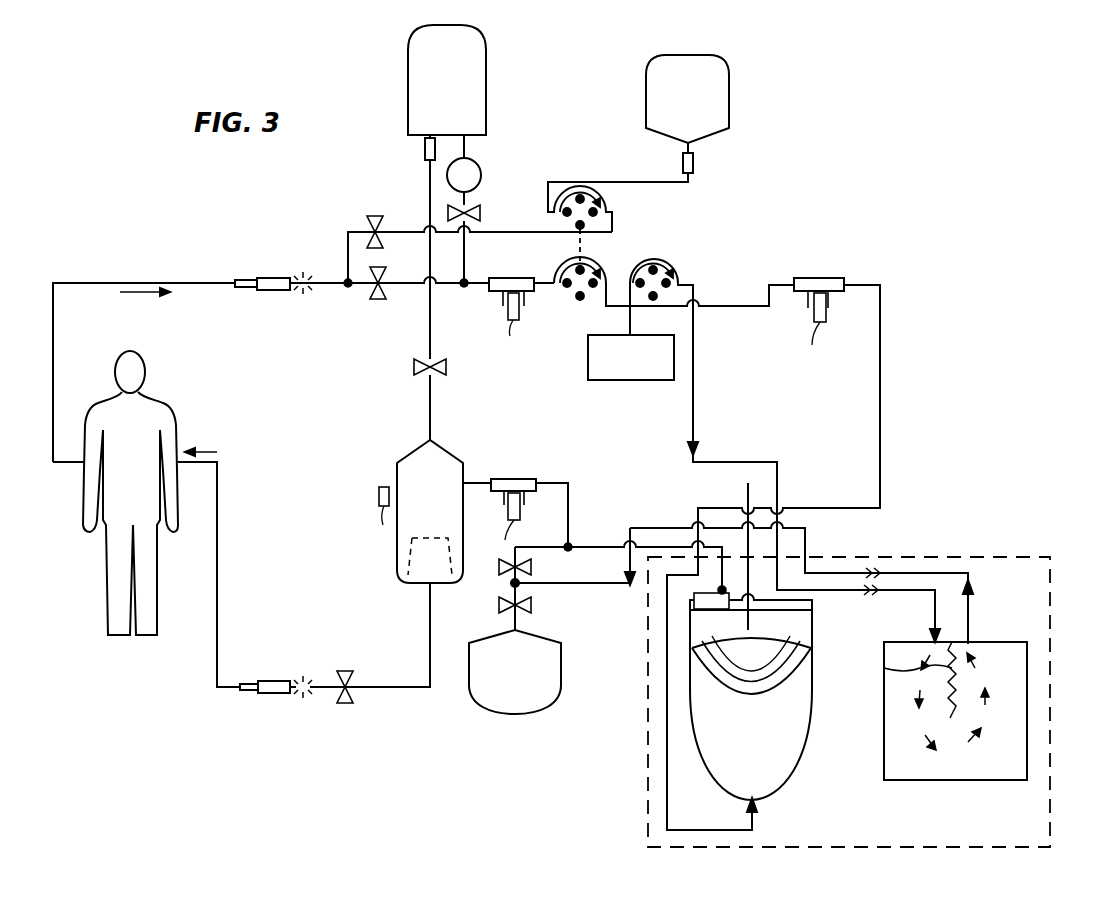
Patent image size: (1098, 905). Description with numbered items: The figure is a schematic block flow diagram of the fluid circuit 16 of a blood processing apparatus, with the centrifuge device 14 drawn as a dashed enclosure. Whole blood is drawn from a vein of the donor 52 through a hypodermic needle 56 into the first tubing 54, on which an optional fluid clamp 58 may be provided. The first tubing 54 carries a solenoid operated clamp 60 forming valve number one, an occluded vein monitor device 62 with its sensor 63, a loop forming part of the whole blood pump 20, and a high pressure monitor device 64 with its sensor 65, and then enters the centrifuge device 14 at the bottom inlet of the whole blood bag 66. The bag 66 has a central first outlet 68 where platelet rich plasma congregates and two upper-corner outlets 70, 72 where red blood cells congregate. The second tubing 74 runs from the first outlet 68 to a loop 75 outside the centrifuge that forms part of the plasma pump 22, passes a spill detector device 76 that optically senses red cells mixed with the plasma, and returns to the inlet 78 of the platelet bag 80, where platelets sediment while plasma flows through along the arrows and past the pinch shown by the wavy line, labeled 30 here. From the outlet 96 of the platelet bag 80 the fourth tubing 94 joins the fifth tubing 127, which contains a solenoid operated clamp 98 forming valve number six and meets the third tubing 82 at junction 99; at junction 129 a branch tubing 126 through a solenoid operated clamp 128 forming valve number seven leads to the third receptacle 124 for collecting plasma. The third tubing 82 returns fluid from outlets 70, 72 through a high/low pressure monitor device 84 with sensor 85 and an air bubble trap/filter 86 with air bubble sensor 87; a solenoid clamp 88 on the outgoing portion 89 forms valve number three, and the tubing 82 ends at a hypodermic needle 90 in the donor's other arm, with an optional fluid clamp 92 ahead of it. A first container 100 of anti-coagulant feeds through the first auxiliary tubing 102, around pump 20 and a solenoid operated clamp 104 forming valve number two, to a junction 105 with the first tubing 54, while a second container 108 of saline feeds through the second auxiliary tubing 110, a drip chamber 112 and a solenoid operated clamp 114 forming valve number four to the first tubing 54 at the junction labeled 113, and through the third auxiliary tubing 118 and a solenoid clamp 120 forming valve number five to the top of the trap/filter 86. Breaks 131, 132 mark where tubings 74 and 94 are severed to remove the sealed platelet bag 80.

The centrifuge device 14 is at (1052, 628).
The fluid circuit 16 is at (912, 426).
The whole blood pump 20 is at (602, 228).
The plasma pump 22 is at (679, 268).
The platelet-plasma interface 30 is at (884, 668).
The donor 52 is at (113, 540).
The first tubing 54 is at (326, 288).
The hypodermic needle 56 is at (275, 278).
The fluid clamp 58 is at (303, 276).
The solenoid operated clamp 60 is at (382, 293).
The occluded vein monitor device 62 is at (531, 291).
The sensor 63 is at (510, 318).
The high pressure monitor device 64 is at (843, 290).
The sensor 65 is at (827, 320).
The whole blood bag 66 is at (806, 744).
The first outlet 68 is at (756, 593).
The outlet 70 is at (690, 603).
The outlet 72 is at (813, 607).
The second tubing 74 is at (695, 376).
The loop 75 is at (697, 298).
The spill detector device 76 is at (652, 382).
The inlet 78 is at (933, 640).
The platelet bag 80 is at (975, 781).
The third tubing 82 is at (311, 684).
The high/low pressure monitor device 84 is at (533, 492).
The sensor 85 is at (520, 515).
The air bubble trap/filter 86 is at (446, 458).
The air bubble sensor 87 is at (384, 486).
The solenoid clamp 88 is at (348, 702).
The tubing portion 89 is at (430, 641).
The hypodermic needle 90 is at (274, 694).
The fluid clamp 92 is at (304, 699).
The fourth tubing 94 is at (956, 574).
The outlet 96 is at (970, 642).
The solenoid operated clamp 98 is at (511, 583).
The junction 99 is at (570, 546).
The first container 100 is at (730, 112).
The first auxiliary tubing 102 is at (640, 182).
The solenoid operated clamp 104 is at (370, 220).
The junction 105 is at (348, 279).
The second container 108 is at (488, 52).
The second auxiliary tubing 110 is at (467, 150).
The drip chamber 112 is at (480, 168).
The junction 113 is at (465, 287).
The solenoid operated clamp 114 is at (476, 204).
The third auxiliary tubing 118 is at (430, 327).
The solenoid clamp 120 is at (414, 367).
The third receptacle 124 is at (512, 703).
The branch tubing 126 is at (518, 623).
The fifth tubing 127 is at (500, 566).
The solenoid operated clamp 128 is at (508, 614).
The junction 129 is at (499, 607).
The break 131 is at (876, 593).
The break 132 is at (893, 575).